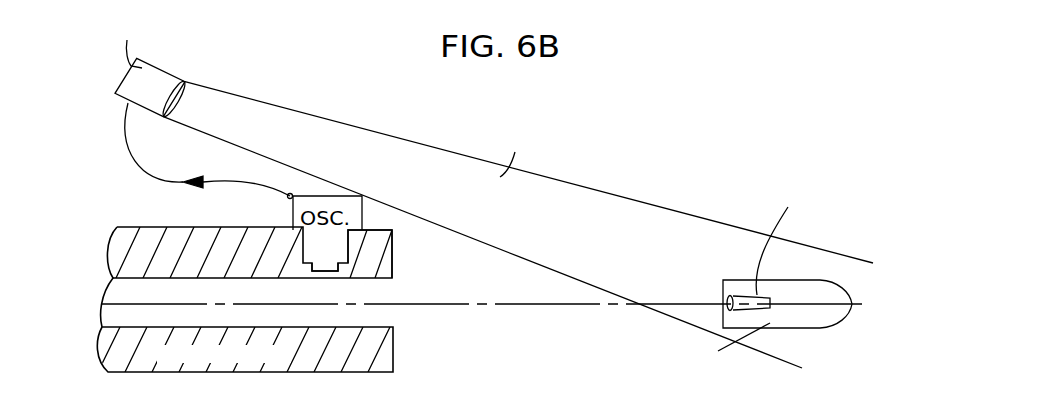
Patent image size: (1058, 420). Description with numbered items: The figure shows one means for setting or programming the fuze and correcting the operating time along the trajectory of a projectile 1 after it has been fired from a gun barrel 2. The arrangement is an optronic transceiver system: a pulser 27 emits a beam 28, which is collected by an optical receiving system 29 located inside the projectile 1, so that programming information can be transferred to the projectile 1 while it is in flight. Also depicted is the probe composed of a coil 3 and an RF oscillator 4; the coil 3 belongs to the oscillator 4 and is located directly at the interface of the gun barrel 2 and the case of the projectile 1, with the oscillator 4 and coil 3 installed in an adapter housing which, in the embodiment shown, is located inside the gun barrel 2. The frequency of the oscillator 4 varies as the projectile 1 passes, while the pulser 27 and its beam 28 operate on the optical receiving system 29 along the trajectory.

The projectile 1 is at (845, 312).
The gun barrel 2 is at (387, 347).
The coil 3 is at (330, 275).
The RF oscillator 4 is at (340, 248).
The pulser 27 is at (168, 77).
The beam 28 is at (333, 128).
The optical receiving system 29 is at (725, 309).